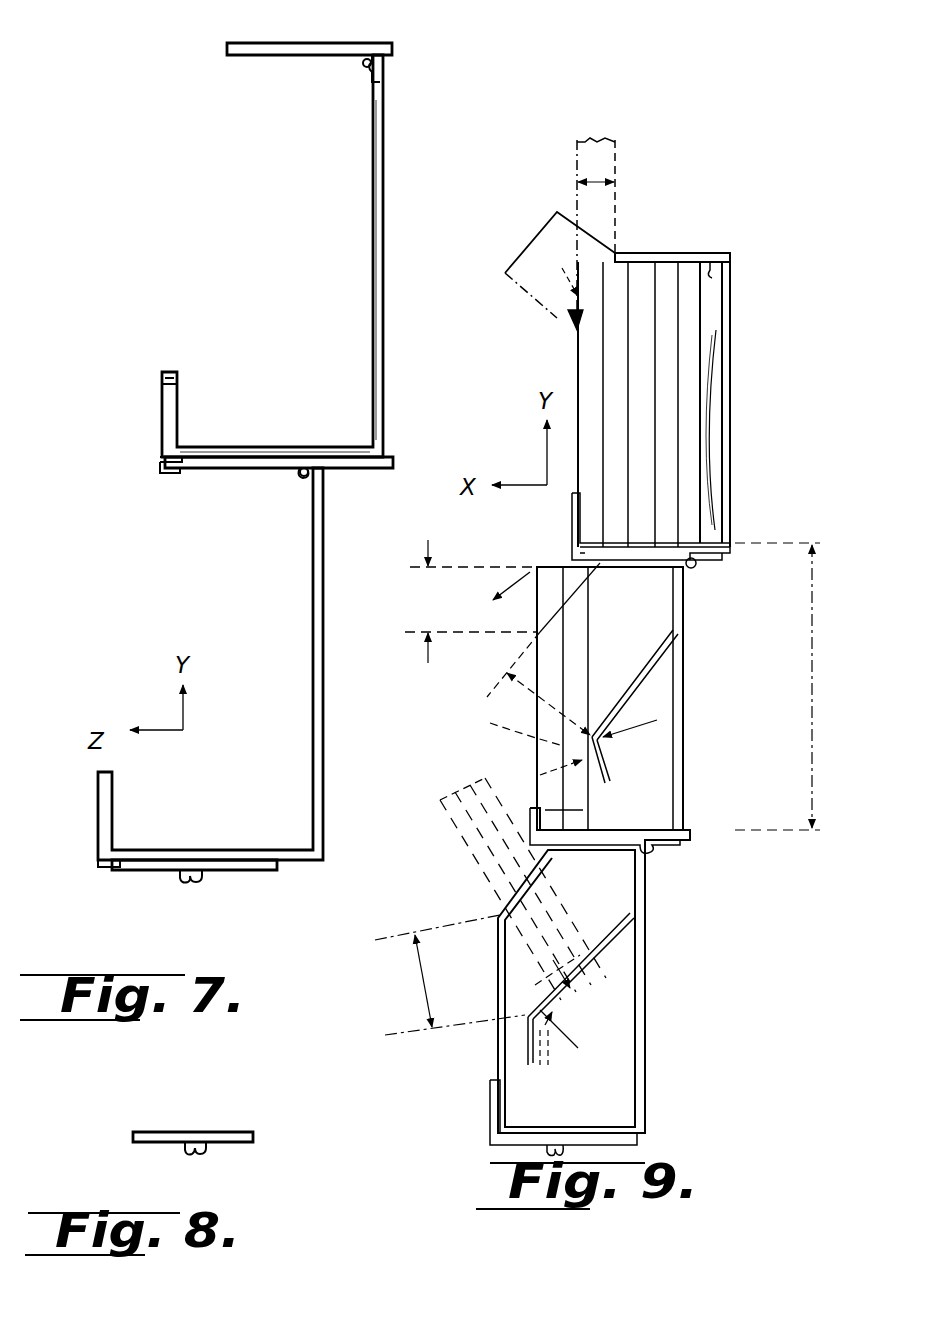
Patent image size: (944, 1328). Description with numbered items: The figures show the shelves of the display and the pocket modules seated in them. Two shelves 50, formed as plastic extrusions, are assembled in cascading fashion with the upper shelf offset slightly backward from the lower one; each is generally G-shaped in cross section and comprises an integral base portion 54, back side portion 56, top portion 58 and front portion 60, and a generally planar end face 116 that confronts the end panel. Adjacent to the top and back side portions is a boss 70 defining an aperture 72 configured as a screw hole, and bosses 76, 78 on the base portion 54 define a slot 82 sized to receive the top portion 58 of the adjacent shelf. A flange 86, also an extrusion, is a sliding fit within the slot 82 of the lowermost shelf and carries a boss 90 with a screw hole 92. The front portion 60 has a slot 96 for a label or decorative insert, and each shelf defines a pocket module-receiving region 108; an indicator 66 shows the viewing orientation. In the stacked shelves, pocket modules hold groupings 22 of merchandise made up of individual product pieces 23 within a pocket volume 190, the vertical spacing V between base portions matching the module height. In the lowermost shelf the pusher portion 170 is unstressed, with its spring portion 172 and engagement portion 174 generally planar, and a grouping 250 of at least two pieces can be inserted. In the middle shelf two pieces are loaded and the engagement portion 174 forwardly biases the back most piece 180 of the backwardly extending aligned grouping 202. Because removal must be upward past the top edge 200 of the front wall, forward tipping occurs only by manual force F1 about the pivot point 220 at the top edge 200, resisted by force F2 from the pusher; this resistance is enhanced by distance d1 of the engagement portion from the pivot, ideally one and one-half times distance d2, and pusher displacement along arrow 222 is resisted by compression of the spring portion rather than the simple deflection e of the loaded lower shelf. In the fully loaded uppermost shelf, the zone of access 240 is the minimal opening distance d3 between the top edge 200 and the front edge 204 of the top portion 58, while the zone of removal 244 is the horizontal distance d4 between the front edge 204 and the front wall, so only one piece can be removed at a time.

In FIG. 9, the grouping of merchandise 22 is at (690, 300).
In FIG. 9, the product piece 23 is at (670, 405).
In FIG. 7, the shelf 50 is at (384, 300).
In FIG. 7, the base portion 54 is at (352, 457).
In FIG. 7, the back side portion 56 is at (384, 185).
In FIG. 7, the top portion 58 is at (275, 57).
In FIG. 7, the front portion 60 is at (168, 372).
In FIG. 7, the direction indicator 66 is at (95, 760).
In FIG. 7, the boss 70 is at (383, 85).
In FIG. 7, the aperture 72 is at (385, 42).
In FIG. 7, the boss 76 is at (165, 470).
In FIG. 7, the boss 78 is at (325, 470).
In FIG. 7, the slot 82 is at (165, 462).
In FIG. 7, the flange 86 is at (235, 872).
In FIG. 8, the flange 86 is at (140, 1140).
In FIG. 7, the boss 90 is at (172, 875).
In FIG. 7, the screw hole 92 is at (200, 882).
In FIG. 7, the slot 96 is at (163, 385).
In FIG. 7, the pocket module-receiving region 108 is at (180, 150).
In FIG. 7, the end face 116 is at (323, 795).
In FIG. 9, the pusher portion 170 is at (525, 1020).
In FIG. 9, the spring portion 172 is at (650, 650).
In FIG. 9, the engagement portion 174 is at (607, 742).
In FIG. 9, the back most piece 180 is at (590, 807).
In FIG. 9, the pocket volume 190 is at (612, 1065).
In FIG. 9, the top edge 200 is at (575, 325).
In FIG. 9, the backwardly extending aligned grouping 202 is at (685, 262).
In FIG. 9, the front edge 204 is at (613, 253).
In FIG. 9, the pivot point 220 is at (537, 620).
In FIG. 9, the arrow 222 is at (555, 757).
In FIG. 9, the zone of access 240 is at (525, 235).
In FIG. 9, the zone of removal 244 is at (597, 138).
In FIG. 9, the grouping 250 is at (460, 838).
In FIG. 9, the distance d1 is at (444, 871).
In FIG. 9, the distance d2 is at (392, 605).
In FIG. 9, the distance d3 is at (553, 275).
In FIG. 9, the distance d4 is at (600, 182).
In FIG. 9, the manual force F1 is at (500, 565).
In FIG. 9, the force F2 is at (645, 715).
In FIG. 9, the vertical spacing v V is at (814, 656).
In FIG. 9, the deflection e is at (565, 1020).